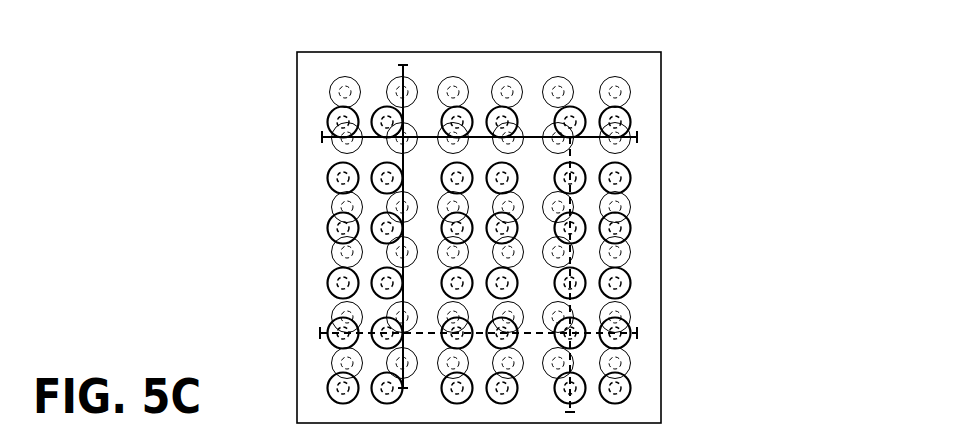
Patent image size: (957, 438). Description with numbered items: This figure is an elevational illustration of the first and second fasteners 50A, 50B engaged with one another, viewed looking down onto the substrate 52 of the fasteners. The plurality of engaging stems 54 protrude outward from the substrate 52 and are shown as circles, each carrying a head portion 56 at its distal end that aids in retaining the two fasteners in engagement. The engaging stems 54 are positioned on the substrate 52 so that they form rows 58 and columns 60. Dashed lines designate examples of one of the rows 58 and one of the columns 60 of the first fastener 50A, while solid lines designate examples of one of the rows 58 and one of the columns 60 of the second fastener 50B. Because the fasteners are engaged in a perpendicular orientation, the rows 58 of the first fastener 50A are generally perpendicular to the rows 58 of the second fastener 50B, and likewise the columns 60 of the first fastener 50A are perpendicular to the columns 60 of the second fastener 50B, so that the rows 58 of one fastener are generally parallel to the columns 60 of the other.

The first fastener 50A is at (520, 218).
The second fastener 50B is at (727, 118).
The substrate 52 is at (645, 181).
The engaging stems 54 is at (373, 110).
The head portions 56 is at (330, 205).
The rows 58 is at (400, 140).
The columns 60 is at (530, 137).